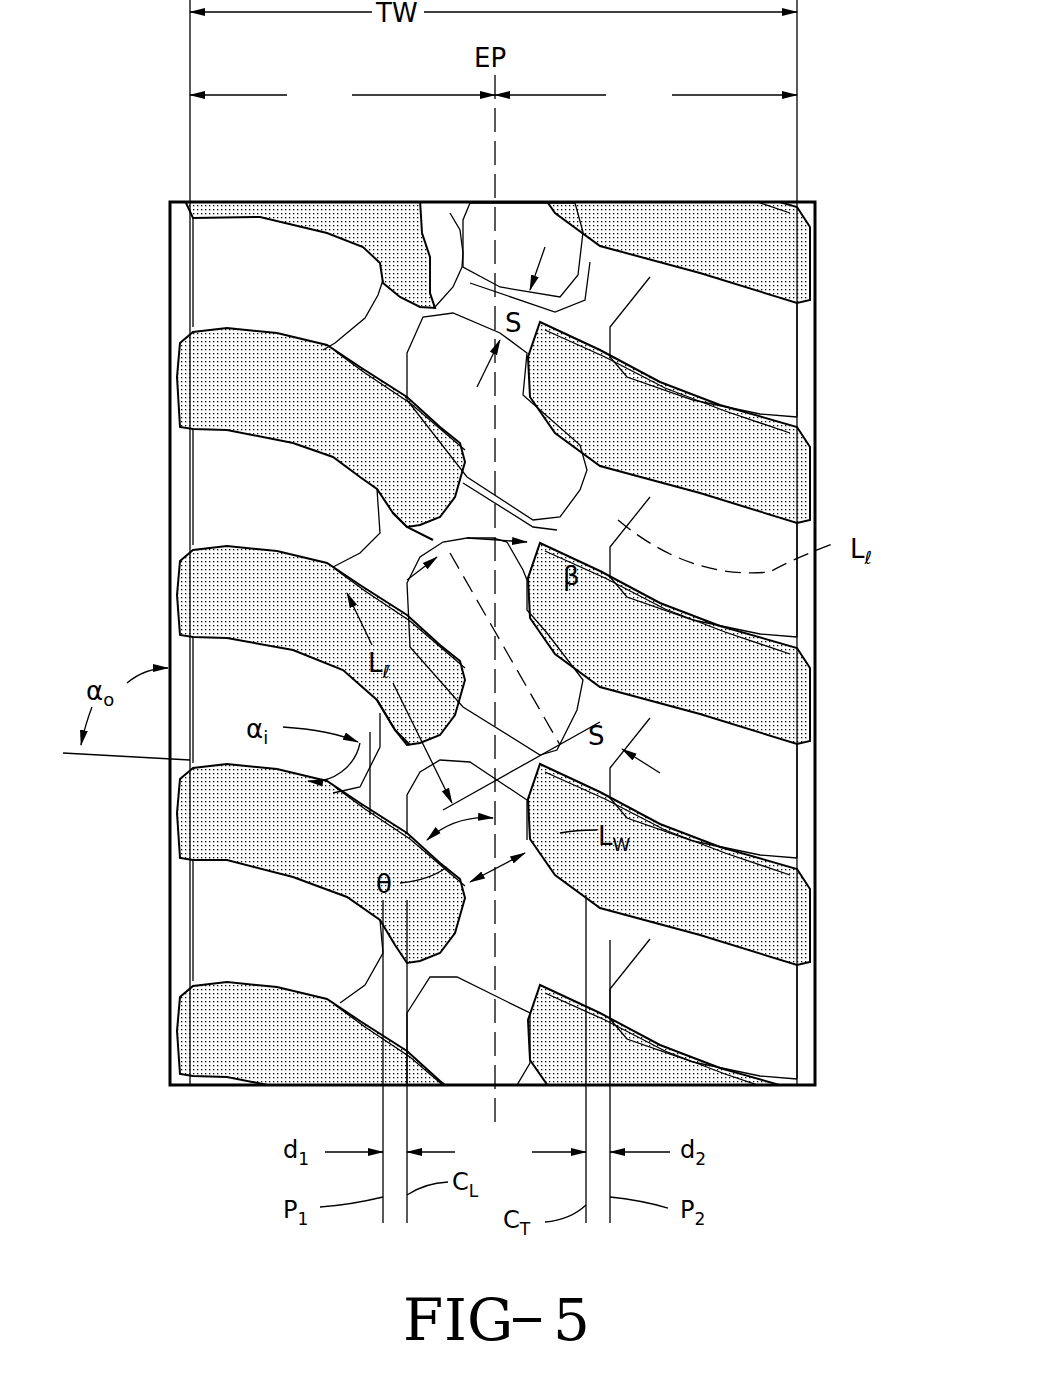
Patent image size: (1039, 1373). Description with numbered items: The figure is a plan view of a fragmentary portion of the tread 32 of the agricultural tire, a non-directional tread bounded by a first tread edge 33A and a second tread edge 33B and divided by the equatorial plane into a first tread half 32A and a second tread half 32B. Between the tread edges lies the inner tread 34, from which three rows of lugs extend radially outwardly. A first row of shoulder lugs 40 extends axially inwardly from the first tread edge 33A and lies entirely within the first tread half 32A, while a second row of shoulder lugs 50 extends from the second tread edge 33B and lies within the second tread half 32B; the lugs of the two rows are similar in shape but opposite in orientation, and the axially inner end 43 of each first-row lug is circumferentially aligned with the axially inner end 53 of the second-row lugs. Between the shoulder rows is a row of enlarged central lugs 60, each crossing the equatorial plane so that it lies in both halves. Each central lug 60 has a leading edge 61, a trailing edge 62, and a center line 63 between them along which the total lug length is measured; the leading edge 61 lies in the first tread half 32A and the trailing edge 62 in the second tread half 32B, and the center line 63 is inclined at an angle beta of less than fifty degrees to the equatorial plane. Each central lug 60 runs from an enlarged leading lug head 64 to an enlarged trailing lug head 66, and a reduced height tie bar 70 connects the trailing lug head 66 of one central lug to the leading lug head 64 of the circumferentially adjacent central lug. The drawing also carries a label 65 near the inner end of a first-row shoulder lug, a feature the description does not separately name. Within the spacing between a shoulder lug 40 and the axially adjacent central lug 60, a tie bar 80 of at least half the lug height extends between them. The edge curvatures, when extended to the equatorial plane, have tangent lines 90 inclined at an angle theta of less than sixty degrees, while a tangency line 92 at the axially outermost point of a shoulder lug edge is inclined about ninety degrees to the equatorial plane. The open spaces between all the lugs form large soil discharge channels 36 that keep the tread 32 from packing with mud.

The first tread edge 33A is at (190, 50).
The second tread edge 33B is at (797, 50).
The first tread half 32A is at (342, 94).
The second tread half 32B is at (646, 94).
The first row shoulder lug 40 is at (248, 268).
The axially inner end of first row lug 43 is at (380, 283).
The second row shoulder lug 50 is at (695, 325).
The axially inner end of second row lug 53 is at (633, 278).
The central lug 60 is at (512, 238).
The trailing enlarged lug head 66 is at (435, 307).
The tread 32 is at (742, 382).
The inner tread 34 is at (777, 487).
The leading edge of central lug 61 is at (423, 410).
The trailing edge of central lug 62 is at (553, 405).
The lug inner end 65 is at (460, 503).
The leading enlarged lug head 64 is at (600, 493).
The center line of central lug 63 is at (573, 647).
The tangency line 92 is at (127, 758).
The soil discharge channel 36 is at (777, 888).
The tie bar 70 is at (380, 953).
The tangent line 90 is at (473, 923).
The tie bar 80 is at (480, 967).